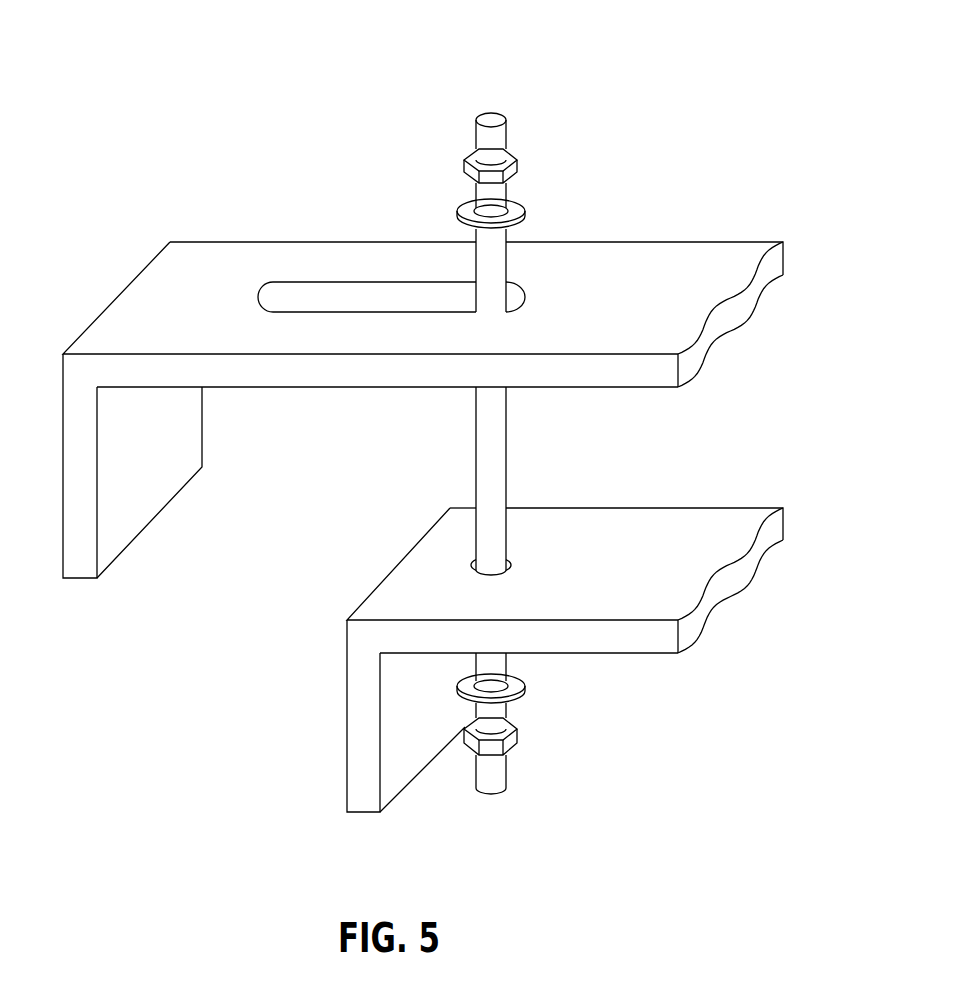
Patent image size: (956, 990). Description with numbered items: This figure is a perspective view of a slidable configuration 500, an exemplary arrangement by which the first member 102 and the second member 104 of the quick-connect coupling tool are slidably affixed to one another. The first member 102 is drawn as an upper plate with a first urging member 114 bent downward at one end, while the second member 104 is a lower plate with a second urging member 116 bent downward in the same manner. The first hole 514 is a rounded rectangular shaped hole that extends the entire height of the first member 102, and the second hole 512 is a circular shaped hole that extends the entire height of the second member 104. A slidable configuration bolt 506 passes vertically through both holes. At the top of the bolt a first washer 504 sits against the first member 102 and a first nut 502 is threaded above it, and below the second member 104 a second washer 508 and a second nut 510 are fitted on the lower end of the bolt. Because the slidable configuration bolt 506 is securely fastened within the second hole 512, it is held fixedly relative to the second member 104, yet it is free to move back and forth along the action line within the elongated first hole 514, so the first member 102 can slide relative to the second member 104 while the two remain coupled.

The slidable configuration 500 is at (789, 62).
The first member 102 is at (238, 262).
The second member 104 is at (632, 545).
The first urging member 114 is at (143, 468).
The second urging member 116 is at (397, 775).
The first nut 502 is at (517, 170).
The first washer 504 is at (526, 218).
The slidable configuration bolt 506 is at (500, 466).
The second washer 508 is at (522, 688).
The second nut 510 is at (514, 742).
The second hole 512 is at (470, 568).
The first hole 514 is at (390, 295).